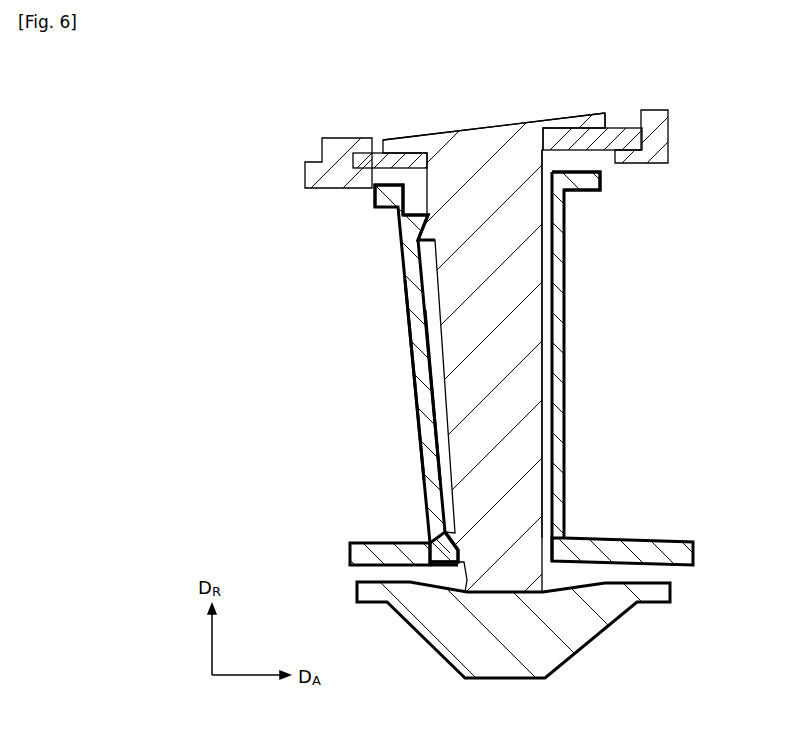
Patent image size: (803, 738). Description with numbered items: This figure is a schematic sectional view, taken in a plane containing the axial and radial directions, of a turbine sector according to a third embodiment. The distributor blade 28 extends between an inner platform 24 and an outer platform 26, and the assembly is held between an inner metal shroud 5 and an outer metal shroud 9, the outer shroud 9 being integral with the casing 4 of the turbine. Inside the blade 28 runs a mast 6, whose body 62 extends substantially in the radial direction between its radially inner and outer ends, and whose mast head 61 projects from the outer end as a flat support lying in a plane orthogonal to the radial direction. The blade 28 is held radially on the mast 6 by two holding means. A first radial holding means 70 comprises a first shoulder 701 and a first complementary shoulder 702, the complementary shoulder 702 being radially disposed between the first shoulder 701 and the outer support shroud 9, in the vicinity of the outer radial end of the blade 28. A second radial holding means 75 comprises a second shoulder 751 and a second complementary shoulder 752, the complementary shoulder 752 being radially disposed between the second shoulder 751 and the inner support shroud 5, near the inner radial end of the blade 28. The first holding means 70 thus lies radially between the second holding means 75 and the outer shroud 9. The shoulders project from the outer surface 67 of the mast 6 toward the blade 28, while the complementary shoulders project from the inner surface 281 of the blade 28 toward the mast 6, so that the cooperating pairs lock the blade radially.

The casing 4 is at (666, 140).
The inner metal shroud 5 is at (580, 630).
The mast 6 is at (523, 337).
The outer metal shroud 9 is at (629, 128).
The inner platform 24 is at (697, 553).
The outer platform 26 is at (587, 186).
The blade 28 is at (568, 412).
The mast head 61 is at (576, 116).
The body 62 is at (556, 255).
The outer surface 67 is at (433, 410).
The first radial holding means 70 is at (401, 239).
The second radial holding means 75 is at (433, 527).
The inner surface 281 is at (415, 373).
The first shoulder 701 is at (421, 237).
The first complementary shoulder 702 is at (405, 219).
The second shoulder 751 is at (455, 537).
The second complementary shoulder 752 is at (448, 553).